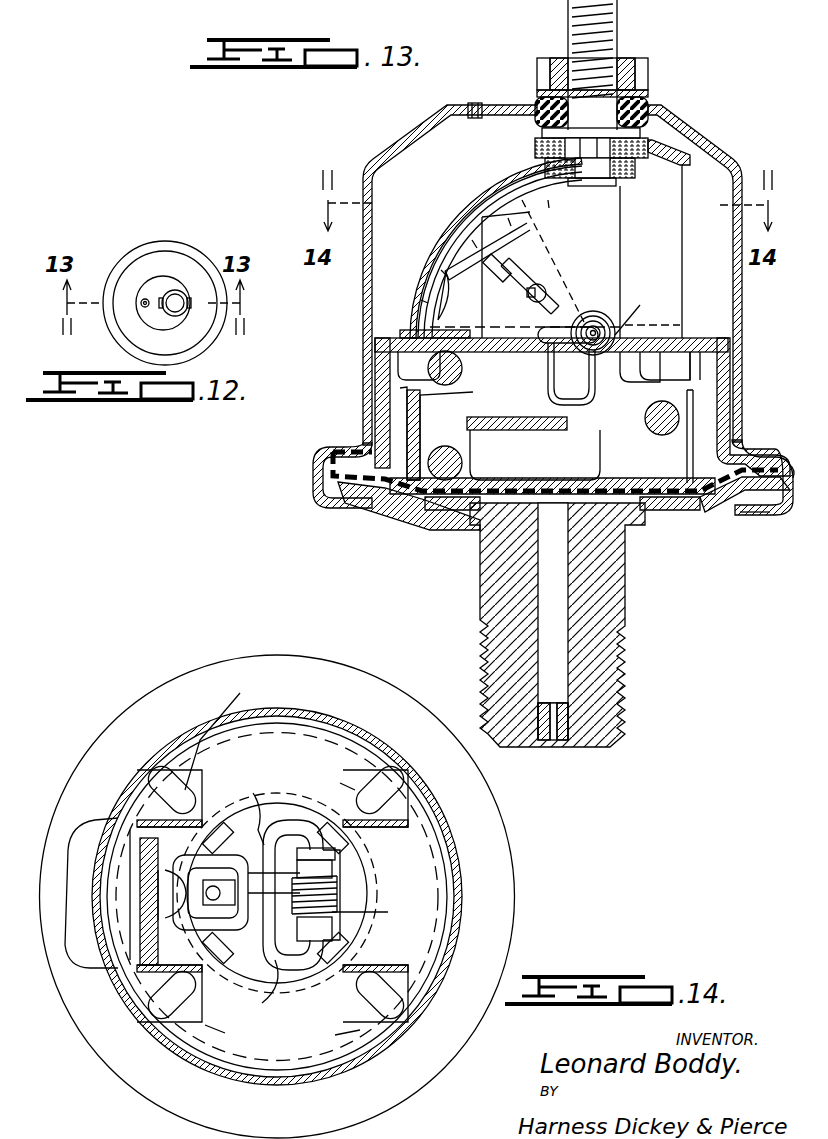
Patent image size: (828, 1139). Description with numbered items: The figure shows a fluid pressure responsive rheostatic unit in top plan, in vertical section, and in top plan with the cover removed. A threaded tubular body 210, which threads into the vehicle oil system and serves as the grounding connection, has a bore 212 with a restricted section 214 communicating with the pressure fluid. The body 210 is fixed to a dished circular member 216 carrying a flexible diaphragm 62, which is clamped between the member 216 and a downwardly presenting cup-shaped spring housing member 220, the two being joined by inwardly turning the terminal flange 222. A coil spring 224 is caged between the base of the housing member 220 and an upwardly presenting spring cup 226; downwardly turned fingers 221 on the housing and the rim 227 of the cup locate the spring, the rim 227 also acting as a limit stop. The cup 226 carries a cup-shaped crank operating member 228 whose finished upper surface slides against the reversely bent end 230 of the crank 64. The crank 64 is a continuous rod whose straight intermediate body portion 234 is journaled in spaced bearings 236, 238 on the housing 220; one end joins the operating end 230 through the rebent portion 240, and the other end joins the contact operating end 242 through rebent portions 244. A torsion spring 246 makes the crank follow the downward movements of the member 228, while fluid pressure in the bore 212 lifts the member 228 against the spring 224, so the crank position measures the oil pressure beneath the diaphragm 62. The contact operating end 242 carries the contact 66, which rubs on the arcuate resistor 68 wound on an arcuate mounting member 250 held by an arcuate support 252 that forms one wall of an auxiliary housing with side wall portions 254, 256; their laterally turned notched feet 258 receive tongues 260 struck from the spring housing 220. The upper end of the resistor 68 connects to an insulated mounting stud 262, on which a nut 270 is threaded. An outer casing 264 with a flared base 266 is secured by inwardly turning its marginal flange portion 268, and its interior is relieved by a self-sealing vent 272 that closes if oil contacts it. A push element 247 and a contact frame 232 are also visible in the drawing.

In FIG. 13, the flexible diaphragm 62 is at (510, 522).
In FIG. 13, the crank 64 is at (540, 395).
In FIG. 13, the contact 66 is at (448, 294).
In FIG. 14, the contact 66 is at (175, 912).
In FIG. 13, the resistor 68 is at (532, 206).
In FIG. 14, the resistor 68 is at (160, 880).
In FIG. 13, the threaded tubular body 210 is at (608, 600).
In FIG. 13, the bore 212 is at (560, 650).
In FIG. 13, the restricted section 214 is at (565, 722).
In FIG. 13, the dished circular member 216 is at (470, 525).
In FIG. 13, the spring housing member 220 is at (730, 386).
In FIG. 14, the spring housing member 220 is at (447, 920).
In FIG. 13, the fingers 221 is at (548, 380).
In FIG. 13, the terminal flange 222 is at (335, 512).
In FIG. 13, the coil spring 224 is at (725, 360).
In FIG. 13, the spring cup 226 is at (696, 442).
In FIG. 13, the rim 227 is at (702, 392).
In FIG. 13, the crank operating member 228 is at (592, 432).
In FIG. 13, the reversely bent end 230 is at (597, 398).
In FIG. 14, the contact frame 232 is at (293, 815).
In FIG. 14, the intermediate body portion 234 is at (335, 850).
In FIG. 14, the bearing 236 is at (340, 865).
In FIG. 14, the bearing 238 is at (335, 928).
In FIG. 14, the rebent portion 240 is at (268, 1008).
In FIG. 14, the contact operating end 242 is at (222, 932).
In FIG. 14, the rebent portions 244 is at (258, 785).
In FIG. 13, the torsion spring 246 is at (618, 330).
In FIG. 14, the torsion spring 246 is at (338, 892).
In FIG. 13, the push rod 247 is at (548, 278).
In FIG. 13, the mounting member 250 is at (470, 232).
In FIG. 13, the arcuate support 252 is at (497, 190).
In FIG. 14, the arcuate support 252 is at (128, 856).
In FIG. 13, the side wall portion 254 is at (468, 316).
In FIG. 14, the side wall portion 254 is at (142, 838).
In FIG. 13, the side wall portion 256 is at (682, 258).
In FIG. 14, the side wall portion 256 is at (400, 812).
In FIG. 14, the notched feet 258 is at (272, 864).
In FIG. 14, the tongues 260 is at (225, 800).
In FIG. 13, the mounting stud 262 is at (620, 46).
In FIG. 12, the mounting stud 262 is at (185, 288).
In FIG. 13, the outer casing 264 is at (742, 300).
In FIG. 12, the outer casing 264 is at (125, 256).
In FIG. 14, the outer casing 264 is at (462, 887).
In FIG. 13, the flared base 266 is at (797, 464).
In FIG. 12, the flared base 266 is at (216, 352).
In FIG. 14, the flared base 266 is at (512, 940).
In FIG. 13, the marginal flange portion 268 is at (768, 522).
In FIG. 13, the nut 270 is at (648, 80).
In FIG. 12, the nut 270 is at (150, 318).
In FIG. 13, the vent 272 is at (480, 106).
In FIG. 12, the vent 272 is at (147, 298).